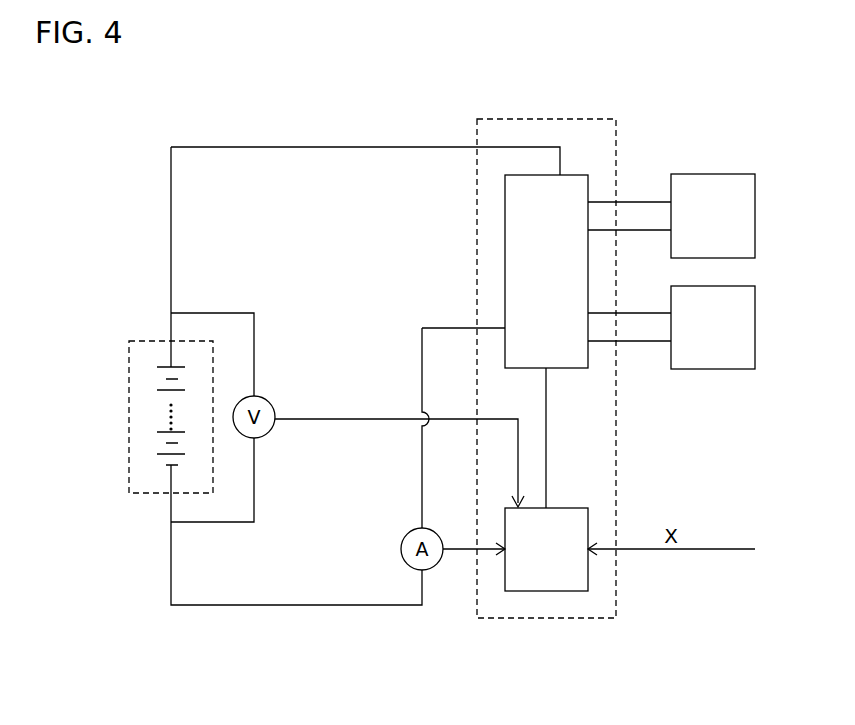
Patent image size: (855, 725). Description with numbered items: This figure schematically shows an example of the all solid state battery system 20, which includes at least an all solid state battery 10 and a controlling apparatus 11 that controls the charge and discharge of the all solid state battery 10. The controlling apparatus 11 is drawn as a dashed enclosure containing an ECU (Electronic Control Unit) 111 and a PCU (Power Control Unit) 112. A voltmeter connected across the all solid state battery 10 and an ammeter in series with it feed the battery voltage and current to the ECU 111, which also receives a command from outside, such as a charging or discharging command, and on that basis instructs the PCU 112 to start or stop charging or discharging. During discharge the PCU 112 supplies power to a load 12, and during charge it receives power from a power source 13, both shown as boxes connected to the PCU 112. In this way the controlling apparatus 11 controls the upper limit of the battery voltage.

The all solid state battery 10 is at (145, 342).
The controlling apparatus 11 is at (608, 388).
The load 12 is at (740, 214).
The power source 13 is at (740, 327).
The all solid state battery system 20 is at (608, 355).
The ECU (Electronic Control Unit) 111 is at (565, 575).
The PCU (Power Control Unit) 112 is at (565, 352).